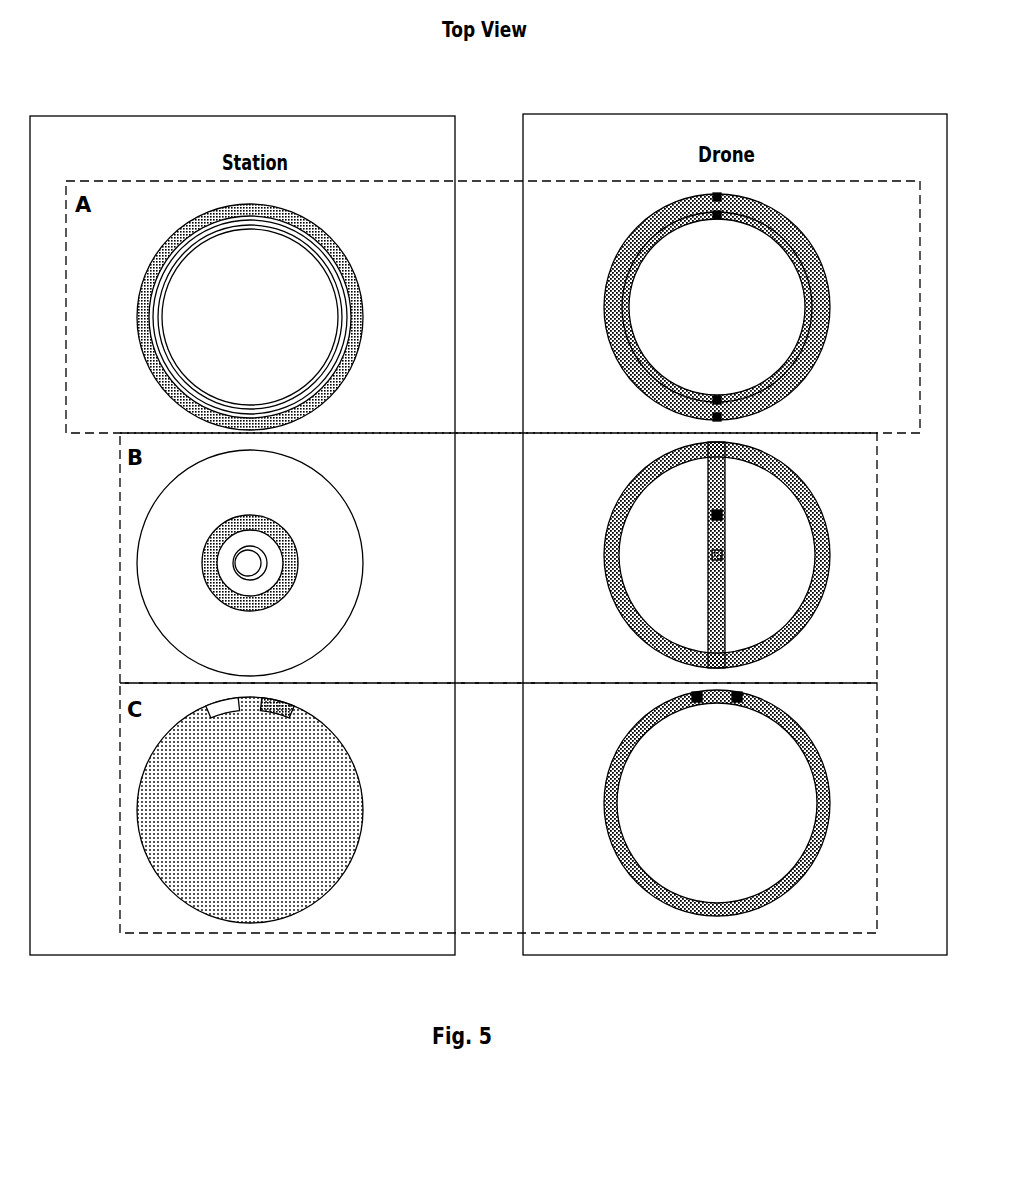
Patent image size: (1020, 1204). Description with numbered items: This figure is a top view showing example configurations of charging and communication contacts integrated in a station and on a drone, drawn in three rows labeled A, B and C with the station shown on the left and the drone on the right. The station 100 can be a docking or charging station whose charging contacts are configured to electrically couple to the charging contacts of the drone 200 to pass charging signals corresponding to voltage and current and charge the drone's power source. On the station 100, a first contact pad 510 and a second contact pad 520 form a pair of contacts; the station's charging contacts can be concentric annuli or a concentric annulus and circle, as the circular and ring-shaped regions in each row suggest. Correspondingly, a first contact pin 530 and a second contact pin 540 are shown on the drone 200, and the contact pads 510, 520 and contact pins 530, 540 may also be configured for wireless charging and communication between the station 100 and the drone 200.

The station 100 is at (138, 279).
The drone 200 is at (608, 246).
The first contact pad 510 is at (200, 711).
The second contact pad 520 is at (300, 711).
The first contact pin 530 is at (717, 215).
The second contact pin 540 is at (737, 697).